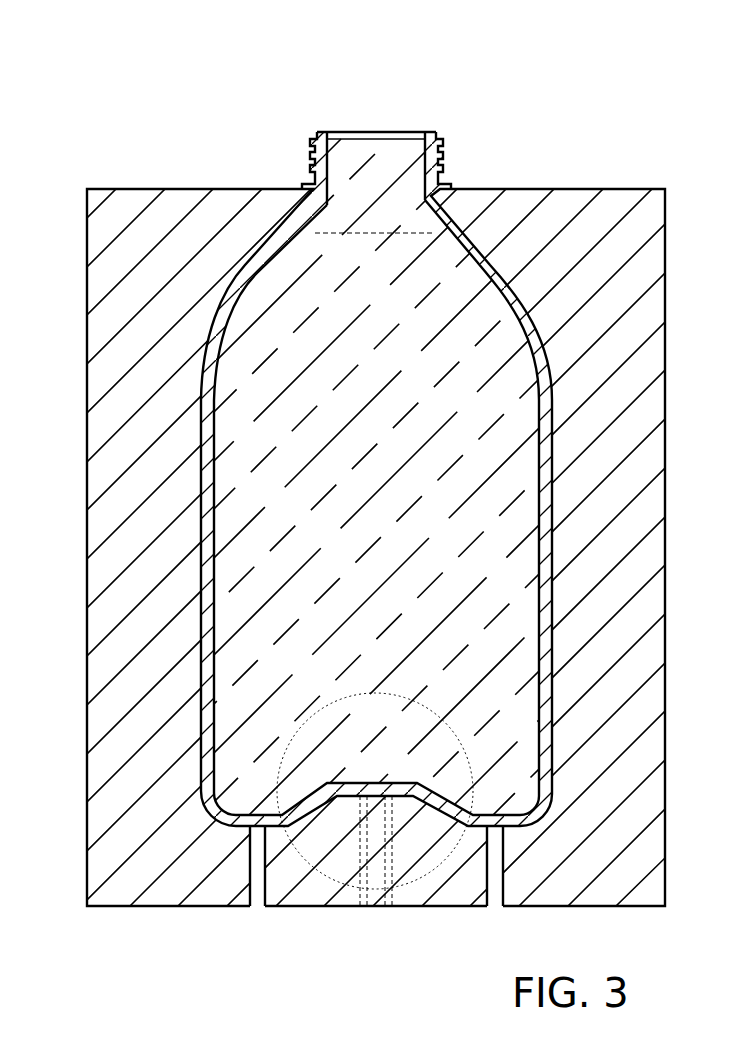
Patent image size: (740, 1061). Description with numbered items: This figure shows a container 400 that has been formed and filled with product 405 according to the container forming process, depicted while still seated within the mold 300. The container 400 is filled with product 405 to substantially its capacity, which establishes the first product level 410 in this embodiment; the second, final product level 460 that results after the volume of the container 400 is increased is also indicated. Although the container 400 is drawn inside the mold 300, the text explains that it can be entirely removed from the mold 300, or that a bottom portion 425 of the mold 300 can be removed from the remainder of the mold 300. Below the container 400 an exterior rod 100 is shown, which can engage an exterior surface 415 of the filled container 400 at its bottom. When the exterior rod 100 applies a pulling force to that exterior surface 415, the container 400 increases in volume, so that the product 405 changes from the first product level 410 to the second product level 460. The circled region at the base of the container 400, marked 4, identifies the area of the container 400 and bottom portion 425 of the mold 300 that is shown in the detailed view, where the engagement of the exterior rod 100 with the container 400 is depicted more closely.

The mold 300 is at (128, 55).
The container 400 is at (275, 232).
The product 405 is at (387, 512).
The first product level 410 is at (348, 139).
The second product level 460 is at (372, 233).
The exterior surface 415 is at (413, 797).
The bottom portion 425 is at (412, 907).
The exterior rod 100 is at (350, 860).
The detail view reference (FIG. 4) 4 is at (368, 892).